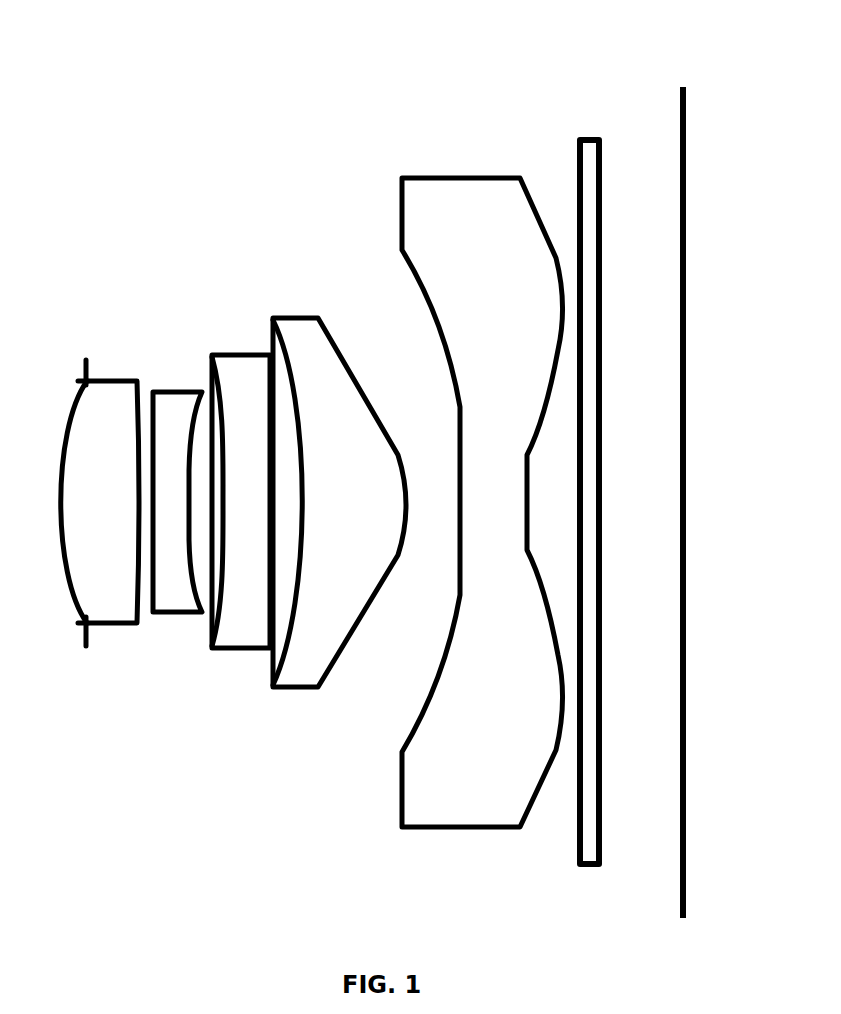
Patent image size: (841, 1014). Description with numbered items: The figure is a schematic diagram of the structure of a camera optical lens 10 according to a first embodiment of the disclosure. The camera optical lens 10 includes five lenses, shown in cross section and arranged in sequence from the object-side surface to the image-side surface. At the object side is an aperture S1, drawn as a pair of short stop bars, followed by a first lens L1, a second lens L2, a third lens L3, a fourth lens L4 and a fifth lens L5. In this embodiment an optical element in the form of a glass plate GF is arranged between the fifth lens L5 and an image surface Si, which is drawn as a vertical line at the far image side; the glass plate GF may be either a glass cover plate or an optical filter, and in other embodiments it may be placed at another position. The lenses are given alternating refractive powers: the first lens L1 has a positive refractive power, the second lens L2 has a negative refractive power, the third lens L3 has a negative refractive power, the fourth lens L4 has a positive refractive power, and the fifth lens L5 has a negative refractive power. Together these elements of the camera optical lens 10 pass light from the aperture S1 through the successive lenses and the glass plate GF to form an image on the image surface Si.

The camera optical lens 10 is at (353, 36).
The first lens L1 is at (100, 480).
The aperture S1 is at (86, 518).
The second lens L2 is at (177, 489).
The third lens L3 is at (241, 479).
The fourth lens L4 is at (339, 484).
The fifth lens L5 is at (482, 486).
The glass plate GF is at (590, 482).
The image surface Si is at (673, 488).